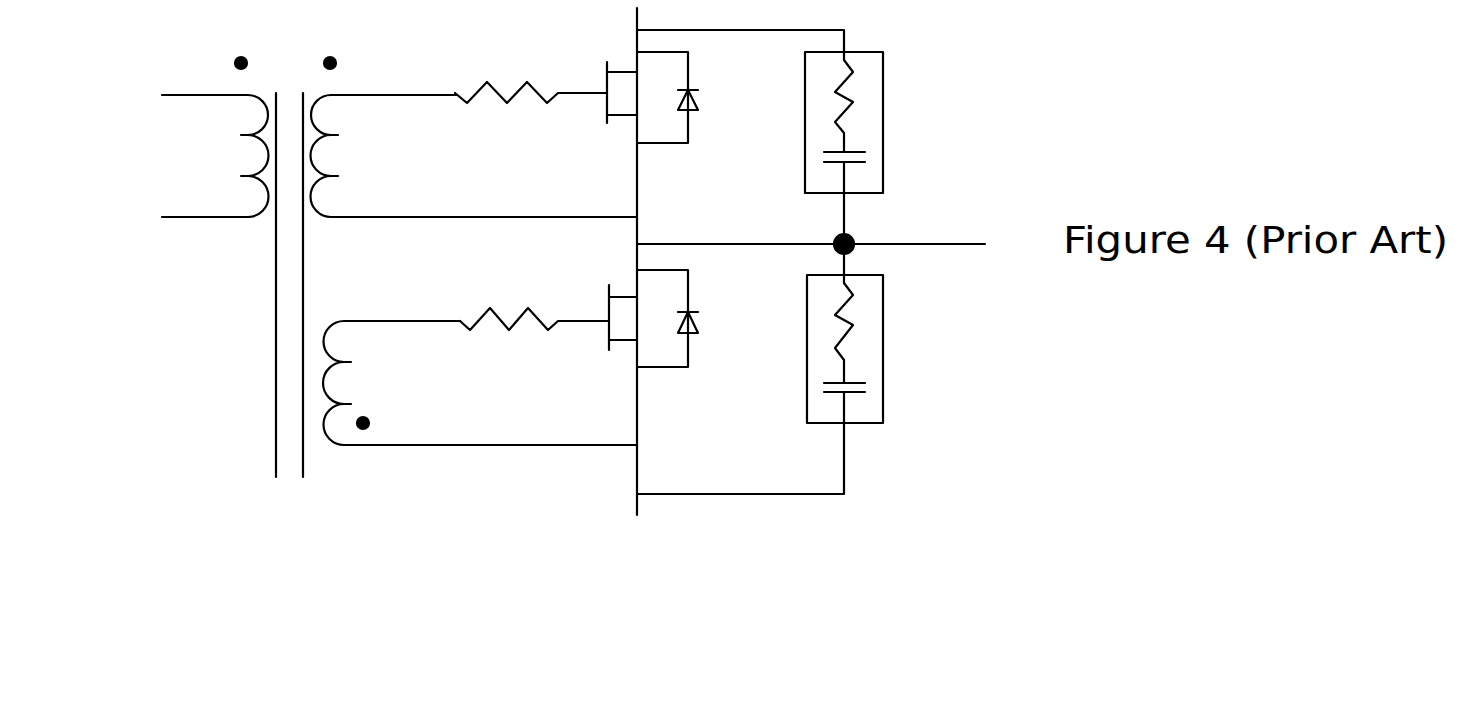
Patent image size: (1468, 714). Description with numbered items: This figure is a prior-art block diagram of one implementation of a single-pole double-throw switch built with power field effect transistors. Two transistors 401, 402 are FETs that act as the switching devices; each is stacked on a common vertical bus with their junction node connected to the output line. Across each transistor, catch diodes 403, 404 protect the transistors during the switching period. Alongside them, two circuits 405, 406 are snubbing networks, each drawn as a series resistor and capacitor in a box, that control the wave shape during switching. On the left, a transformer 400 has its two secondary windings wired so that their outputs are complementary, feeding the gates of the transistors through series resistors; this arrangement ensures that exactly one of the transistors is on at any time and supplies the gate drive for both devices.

The transformer 400 is at (399, 293).
The transistor 401 is at (598, 115).
The transistor 402 is at (598, 341).
The diode 403 is at (694, 114).
The diode 404 is at (694, 334).
The circuit 405 is at (882, 122).
The circuit 406 is at (883, 349).